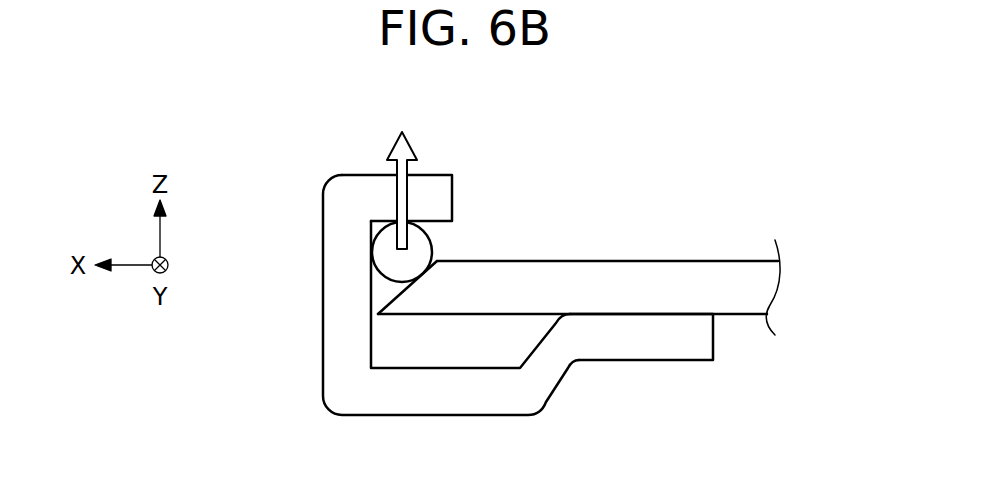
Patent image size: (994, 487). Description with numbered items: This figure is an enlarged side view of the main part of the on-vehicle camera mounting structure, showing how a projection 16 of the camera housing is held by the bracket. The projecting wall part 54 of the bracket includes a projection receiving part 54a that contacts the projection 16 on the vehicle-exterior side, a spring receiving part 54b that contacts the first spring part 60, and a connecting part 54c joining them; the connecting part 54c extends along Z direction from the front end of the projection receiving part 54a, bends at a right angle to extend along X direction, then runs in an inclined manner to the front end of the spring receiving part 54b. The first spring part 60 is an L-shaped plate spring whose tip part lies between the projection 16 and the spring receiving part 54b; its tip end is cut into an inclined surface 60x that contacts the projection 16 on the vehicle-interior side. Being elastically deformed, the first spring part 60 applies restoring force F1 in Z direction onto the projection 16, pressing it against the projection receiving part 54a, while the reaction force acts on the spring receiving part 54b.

The projecting wall part 54 is at (475, 272).
The projection receiving part 54a is at (432, 187).
The spring receiving part 54b is at (633, 348).
The connecting part 54c is at (338, 341).
The first spring part 60 is at (509, 253).
The inclined surface 60x is at (393, 300).
The projection 16 is at (420, 245).
The force F1 is at (386, 146).